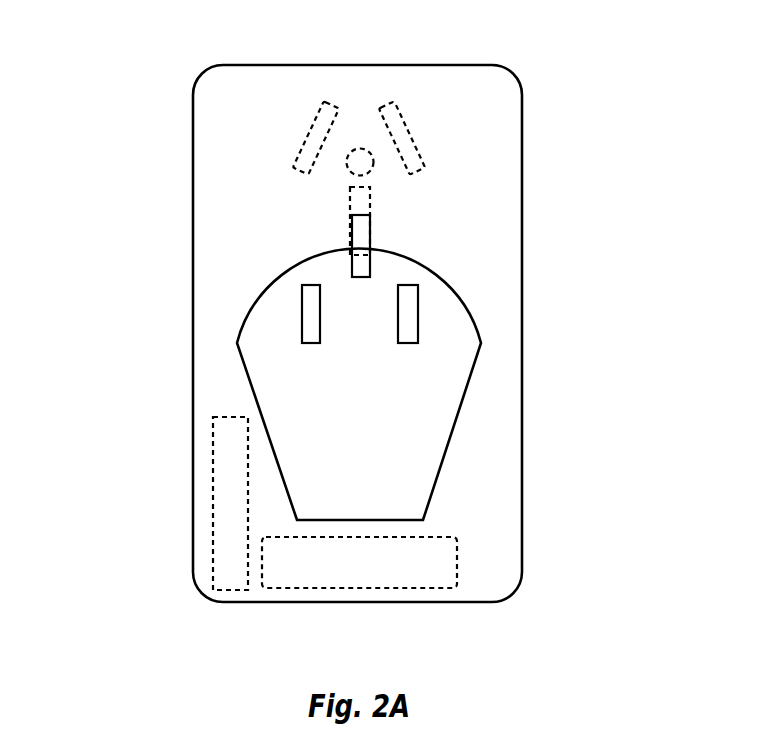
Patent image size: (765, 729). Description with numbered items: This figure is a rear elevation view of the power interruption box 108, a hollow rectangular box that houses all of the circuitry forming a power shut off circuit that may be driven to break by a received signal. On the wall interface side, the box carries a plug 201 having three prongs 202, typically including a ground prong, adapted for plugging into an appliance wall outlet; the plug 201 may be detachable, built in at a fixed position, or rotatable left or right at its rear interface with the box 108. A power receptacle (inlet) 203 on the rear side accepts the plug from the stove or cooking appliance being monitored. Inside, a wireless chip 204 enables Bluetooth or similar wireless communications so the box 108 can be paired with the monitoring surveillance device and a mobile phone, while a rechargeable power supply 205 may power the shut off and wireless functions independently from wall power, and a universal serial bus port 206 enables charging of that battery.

The power interruption box 108 is at (522, 237).
The plug 201 is at (235, 318).
The prongs 202 is at (312, 255).
The power receptacle (inlet) 203 is at (297, 97).
The wireless chip 204 is at (457, 565).
The rechargeable power supply 205 is at (213, 515).
The universal serial bus (USB) port 206 is at (370, 207).